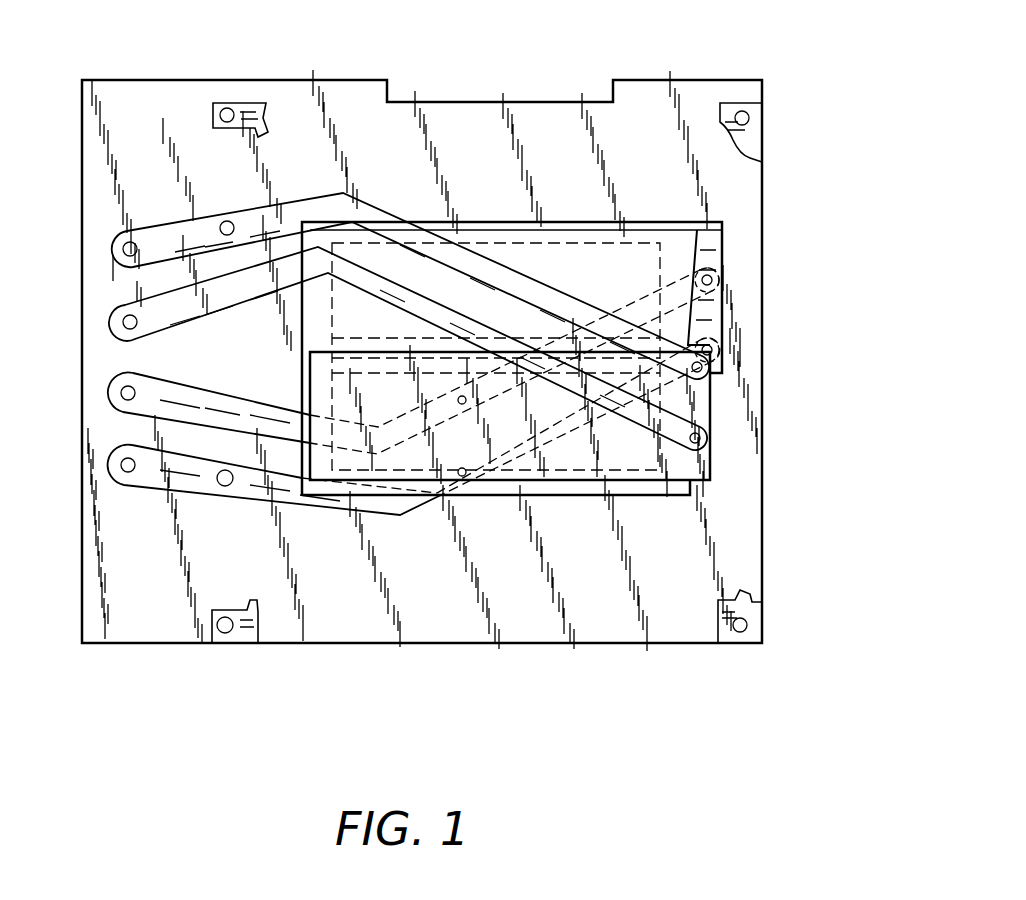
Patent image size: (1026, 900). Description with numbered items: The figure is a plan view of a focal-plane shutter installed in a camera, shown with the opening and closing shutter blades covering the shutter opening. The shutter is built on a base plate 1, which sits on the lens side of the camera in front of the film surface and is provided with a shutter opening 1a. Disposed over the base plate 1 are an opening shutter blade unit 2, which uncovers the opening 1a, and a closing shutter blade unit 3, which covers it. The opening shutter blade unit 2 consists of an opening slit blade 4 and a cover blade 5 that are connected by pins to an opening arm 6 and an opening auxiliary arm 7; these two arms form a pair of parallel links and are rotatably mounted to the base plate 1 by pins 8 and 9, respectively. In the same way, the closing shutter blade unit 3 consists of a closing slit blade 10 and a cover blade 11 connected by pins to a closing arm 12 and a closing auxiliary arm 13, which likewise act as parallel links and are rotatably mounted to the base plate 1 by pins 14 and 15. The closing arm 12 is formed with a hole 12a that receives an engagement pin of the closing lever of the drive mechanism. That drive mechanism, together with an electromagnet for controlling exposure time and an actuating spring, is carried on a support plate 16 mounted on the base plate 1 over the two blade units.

The base plate 1 is at (345, 92).
The shutter opening 1a is at (497, 240).
The opening shutter blade unit 2 is at (820, 273).
The closing shutter blade unit 3 is at (812, 340).
The opening slit blade 4 is at (713, 262).
The cover blade 5 is at (680, 507).
The opening arm 6 is at (377, 452).
The opening auxiliary arm 7 is at (379, 361).
The pin 8 is at (118, 470).
The pin 9 is at (118, 400).
The closing slit blade 10 is at (703, 465).
The cover blade 11 is at (713, 337).
The closing arm 12 is at (367, 270).
The hole 12a is at (227, 226).
The closing auxiliary arm 13 is at (366, 348).
The pin 14 is at (112, 250).
The pin 15 is at (112, 327).
The support plate 16 is at (247, 105).